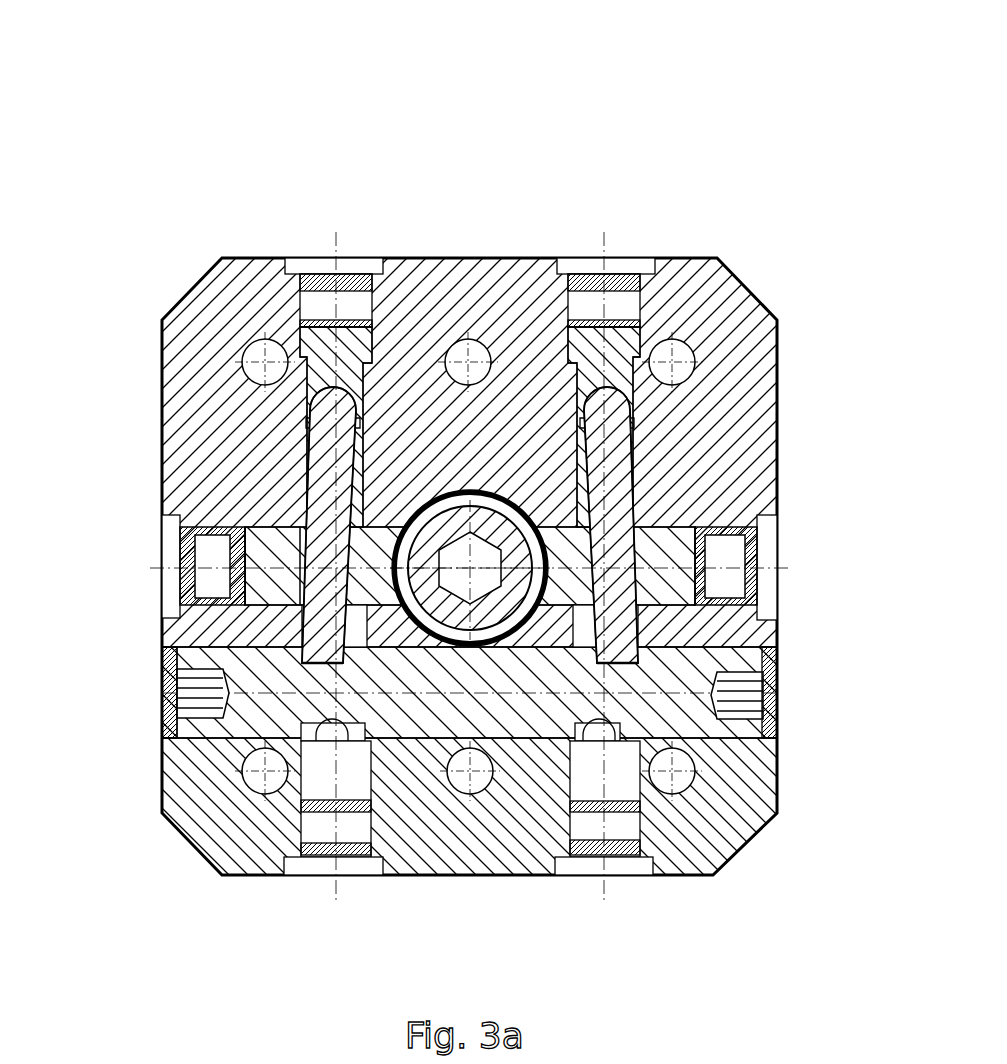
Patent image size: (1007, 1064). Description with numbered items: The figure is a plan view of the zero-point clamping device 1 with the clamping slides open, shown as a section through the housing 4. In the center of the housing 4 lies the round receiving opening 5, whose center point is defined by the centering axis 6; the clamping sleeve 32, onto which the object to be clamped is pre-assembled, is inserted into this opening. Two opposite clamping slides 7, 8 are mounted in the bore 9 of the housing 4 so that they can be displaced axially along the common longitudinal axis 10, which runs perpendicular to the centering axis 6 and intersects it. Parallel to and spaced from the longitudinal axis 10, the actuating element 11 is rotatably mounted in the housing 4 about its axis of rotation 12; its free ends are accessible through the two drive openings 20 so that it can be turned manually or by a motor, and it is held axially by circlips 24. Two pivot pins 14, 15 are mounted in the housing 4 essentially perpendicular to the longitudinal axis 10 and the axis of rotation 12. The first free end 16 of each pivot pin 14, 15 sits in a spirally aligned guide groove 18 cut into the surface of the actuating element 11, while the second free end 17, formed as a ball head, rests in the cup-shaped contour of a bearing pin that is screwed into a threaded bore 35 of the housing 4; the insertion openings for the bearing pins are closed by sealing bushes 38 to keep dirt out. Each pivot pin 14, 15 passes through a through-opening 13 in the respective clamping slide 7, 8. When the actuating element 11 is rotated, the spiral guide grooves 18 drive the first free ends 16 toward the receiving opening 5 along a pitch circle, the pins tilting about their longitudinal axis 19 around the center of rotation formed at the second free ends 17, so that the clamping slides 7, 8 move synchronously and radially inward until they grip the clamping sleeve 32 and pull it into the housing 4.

The zero-point clamping device 1 is at (577, 152).
The housing 4 is at (690, 330).
The receiving opening 5 is at (432, 690).
The centering axis 6 is at (487, 495).
The clamping slide 7 is at (303, 598).
The clamping slide 8 is at (779, 509).
The bore 9 is at (700, 580).
The longitudinal axis 10 is at (229, 562).
The actuating element 11 is at (218, 855).
The axis of rotation 12 is at (510, 695).
The through-opening 13 is at (172, 665).
The pivot pin 14 is at (305, 495).
The pivot pin 15 is at (636, 395).
The first free end 16 is at (335, 648).
The second free end 17 is at (258, 352).
The guide groove 18 is at (693, 777).
The longitudinal axis 19 is at (645, 445).
The drive opening 20 is at (762, 678).
The circlip 24 is at (162, 743).
The clamping sleeve 32 is at (447, 535).
The threaded bore 35 is at (298, 300).
The sealing bush 38 is at (336, 285).